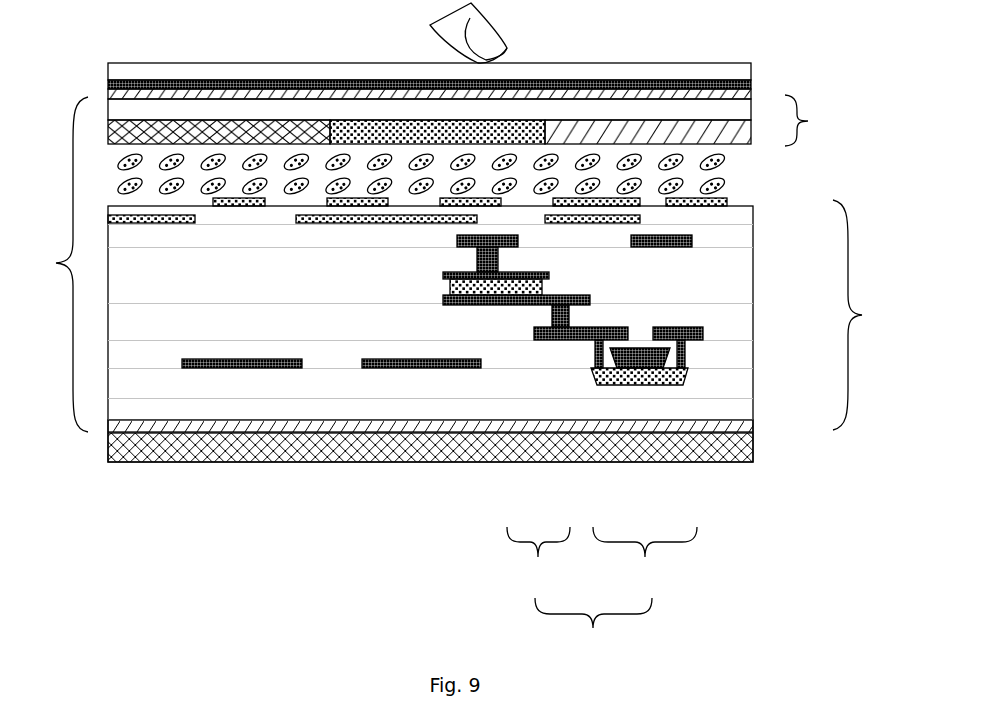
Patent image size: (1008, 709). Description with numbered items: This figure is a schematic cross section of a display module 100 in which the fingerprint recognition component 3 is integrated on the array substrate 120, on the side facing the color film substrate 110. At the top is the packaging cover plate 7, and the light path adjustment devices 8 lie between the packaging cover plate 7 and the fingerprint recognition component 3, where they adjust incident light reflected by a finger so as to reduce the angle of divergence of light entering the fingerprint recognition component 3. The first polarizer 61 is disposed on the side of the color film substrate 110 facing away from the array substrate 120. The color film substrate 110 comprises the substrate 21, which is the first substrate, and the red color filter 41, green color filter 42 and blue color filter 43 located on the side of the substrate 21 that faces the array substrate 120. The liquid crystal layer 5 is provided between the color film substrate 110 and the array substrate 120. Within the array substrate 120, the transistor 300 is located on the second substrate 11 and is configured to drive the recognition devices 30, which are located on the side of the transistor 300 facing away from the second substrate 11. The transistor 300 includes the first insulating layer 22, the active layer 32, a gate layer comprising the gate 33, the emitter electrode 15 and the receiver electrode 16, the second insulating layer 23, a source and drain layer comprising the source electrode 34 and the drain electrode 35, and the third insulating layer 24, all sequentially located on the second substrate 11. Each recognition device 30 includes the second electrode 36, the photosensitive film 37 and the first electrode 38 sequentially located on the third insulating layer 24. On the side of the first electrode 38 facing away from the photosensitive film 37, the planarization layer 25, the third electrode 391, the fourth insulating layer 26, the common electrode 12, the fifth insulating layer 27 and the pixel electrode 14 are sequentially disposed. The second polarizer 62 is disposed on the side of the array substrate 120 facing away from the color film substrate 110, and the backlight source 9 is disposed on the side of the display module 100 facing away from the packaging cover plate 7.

The packaging cover plate 7 is at (751, 70).
The light path adjustment devices 8 is at (751, 86).
The first polarizer 61 is at (684, 93).
The substrate 21 is at (630, 113).
The red color filter 41 is at (153, 130).
The green color filter 42 is at (352, 130).
The blue color filter 43 is at (578, 130).
The color film substrate 110 is at (820, 120).
The liquid crystal layer 5 is at (724, 184).
The fifth insulating layer 27 is at (753, 215).
The fourth insulating layer 26 is at (753, 238).
The third electrode 391 is at (692, 247).
The planarization layer 25 is at (753, 296).
The third insulating layer 24 is at (753, 318).
The second insulating layer 23 is at (753, 352).
The first insulating layer 22 is at (753, 383).
The second substrate 11 is at (753, 408).
The second polarizer 62 is at (753, 426).
The backlight source 9 is at (753, 448).
The array substrate 120 is at (870, 315).
The emitter electrode 15 is at (234, 368).
The receiver electrode 16 is at (406, 368).
The common electrode 12 is at (316, 206).
The pixel electrode 14 is at (347, 206).
The first electrode 38 is at (512, 279).
The photosensitive film 37 is at (540, 295).
The second electrode 36 is at (569, 327).
The source electrode 34 is at (599, 368).
The gate 33 is at (627, 368).
The active layer 32 is at (659, 340).
The drain electrode 35 is at (692, 340).
The recognition devices 30 is at (538, 558).
The transistor 300 is at (645, 560).
The fingerprint recognition component 3 is at (593, 629).
The display module 100 is at (51, 264).